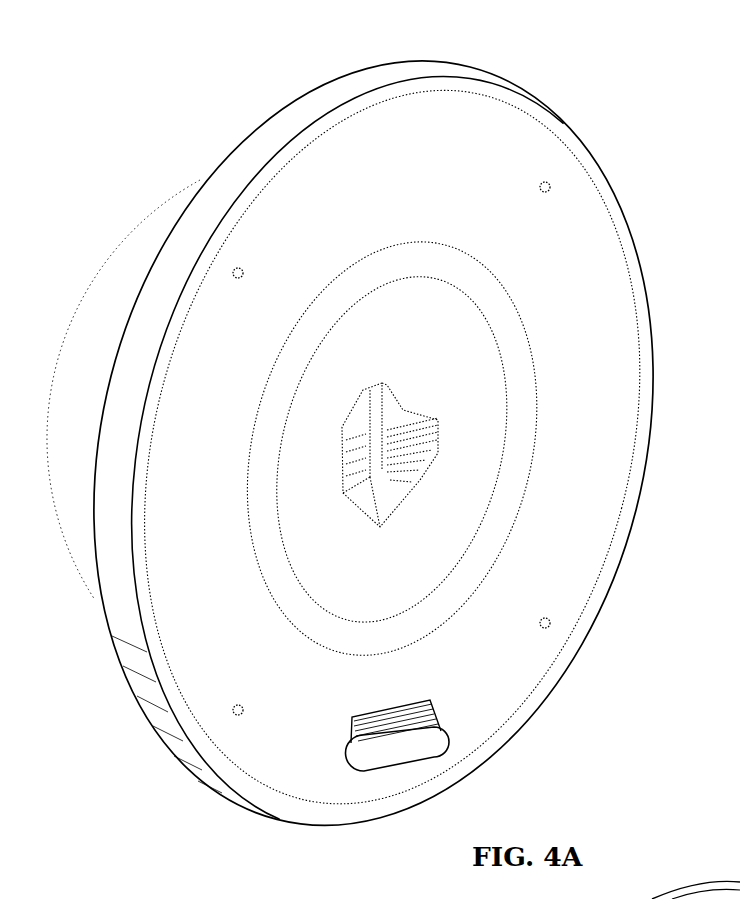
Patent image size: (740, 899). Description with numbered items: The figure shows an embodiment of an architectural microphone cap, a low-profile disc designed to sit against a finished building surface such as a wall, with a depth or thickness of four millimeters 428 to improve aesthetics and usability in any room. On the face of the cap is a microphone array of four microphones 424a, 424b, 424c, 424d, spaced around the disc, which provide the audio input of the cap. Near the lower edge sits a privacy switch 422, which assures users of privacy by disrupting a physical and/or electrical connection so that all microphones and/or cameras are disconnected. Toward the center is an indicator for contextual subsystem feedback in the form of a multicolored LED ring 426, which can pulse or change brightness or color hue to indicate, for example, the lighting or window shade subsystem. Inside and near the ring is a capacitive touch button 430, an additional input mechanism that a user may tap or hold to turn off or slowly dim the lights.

The depth/thickness of 4 mm 428 is at (434, 26).
The multicolored LED ring 426 is at (387, 250).
The capacitive touch button 430 is at (398, 385).
The privacy switch 422 is at (403, 768).
The microphone 424a is at (551, 185).
The microphone 424b is at (552, 624).
The microphone 424c is at (243, 711).
The microphone 424d is at (233, 273).